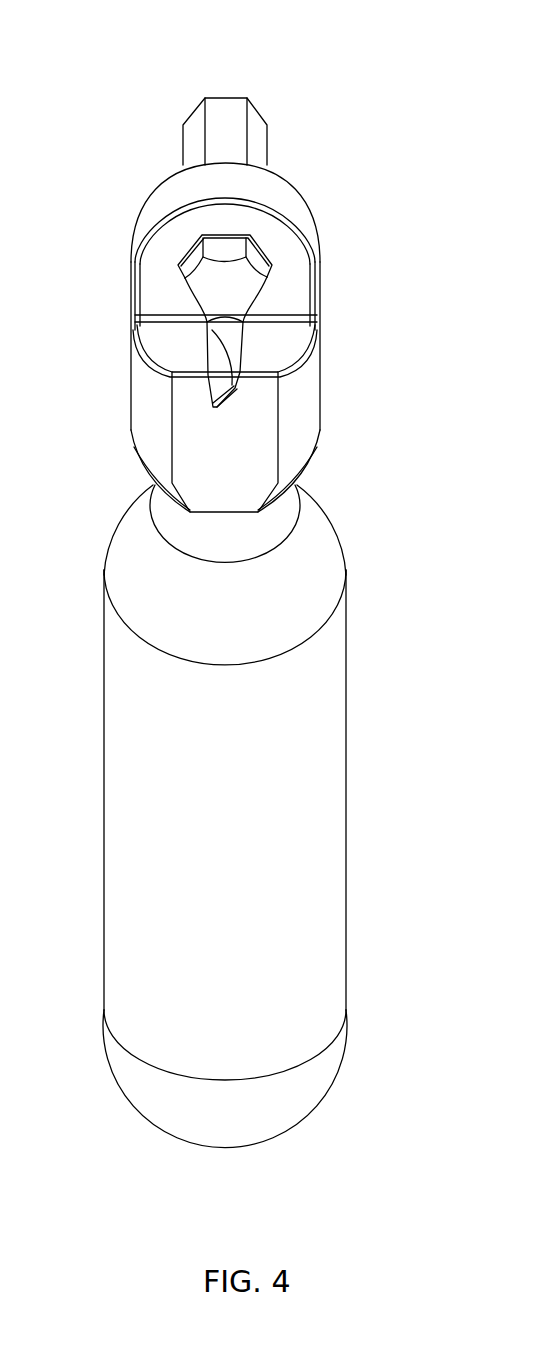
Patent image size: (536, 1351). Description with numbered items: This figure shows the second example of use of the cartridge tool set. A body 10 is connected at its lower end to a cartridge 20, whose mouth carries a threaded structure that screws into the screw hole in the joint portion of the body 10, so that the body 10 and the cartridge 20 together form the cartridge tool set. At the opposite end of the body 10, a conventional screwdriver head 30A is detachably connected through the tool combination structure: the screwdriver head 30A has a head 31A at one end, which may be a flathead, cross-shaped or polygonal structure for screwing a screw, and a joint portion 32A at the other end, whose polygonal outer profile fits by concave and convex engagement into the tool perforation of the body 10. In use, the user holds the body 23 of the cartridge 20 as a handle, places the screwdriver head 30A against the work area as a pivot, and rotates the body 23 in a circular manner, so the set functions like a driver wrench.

The body 10 is at (320, 362).
The cartridge 20 is at (273, 816).
The body of the cartridge 23 is at (318, 802).
The screwdriver head 30A is at (201, 206).
The head 31A is at (220, 373).
The joint portion 32A is at (253, 135).